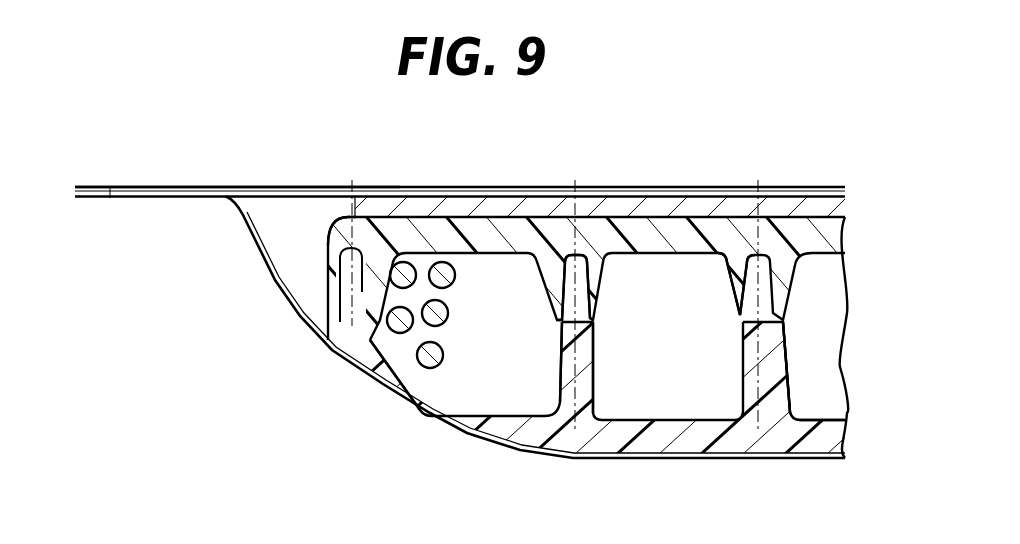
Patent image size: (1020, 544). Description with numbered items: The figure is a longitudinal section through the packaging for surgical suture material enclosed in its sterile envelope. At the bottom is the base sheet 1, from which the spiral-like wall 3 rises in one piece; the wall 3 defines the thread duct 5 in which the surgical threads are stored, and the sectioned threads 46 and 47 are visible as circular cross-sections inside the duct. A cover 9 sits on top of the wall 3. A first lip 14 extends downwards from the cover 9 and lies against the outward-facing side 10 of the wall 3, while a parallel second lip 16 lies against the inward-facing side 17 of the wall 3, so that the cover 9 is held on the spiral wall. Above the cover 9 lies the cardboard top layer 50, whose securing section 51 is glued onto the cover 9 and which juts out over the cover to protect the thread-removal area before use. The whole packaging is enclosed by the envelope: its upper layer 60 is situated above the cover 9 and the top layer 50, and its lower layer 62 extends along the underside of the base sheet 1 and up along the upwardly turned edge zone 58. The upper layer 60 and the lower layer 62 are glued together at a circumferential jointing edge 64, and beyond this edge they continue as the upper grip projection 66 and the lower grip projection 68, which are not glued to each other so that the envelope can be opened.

The base sheet 1 is at (617, 437).
The wall 3 is at (770, 360).
The thread duct 5 is at (602, 370).
The cover 9 is at (348, 222).
The outward-facing side 10 is at (747, 388).
The first lip 14 is at (733, 287).
The second lip 16 is at (607, 312).
The inward-facing side 17 is at (597, 357).
The surgical thread 46 is at (456, 283).
The surgical thread 47 is at (449, 318).
The top layer 50 is at (697, 205).
The securing section 51 is at (542, 206).
The edge zone 58 is at (463, 418).
The upper layer 60 is at (611, 188).
The lower layer 62 is at (238, 232).
The jointing edge 64 is at (171, 188).
The upper grip projection 66 is at (110, 187).
The lower grip projection 68 is at (110, 198).